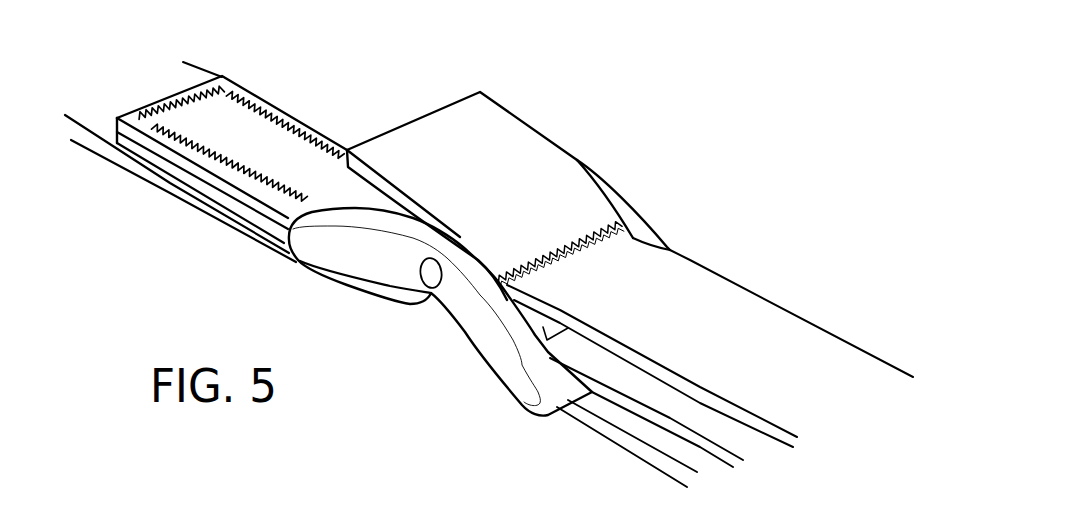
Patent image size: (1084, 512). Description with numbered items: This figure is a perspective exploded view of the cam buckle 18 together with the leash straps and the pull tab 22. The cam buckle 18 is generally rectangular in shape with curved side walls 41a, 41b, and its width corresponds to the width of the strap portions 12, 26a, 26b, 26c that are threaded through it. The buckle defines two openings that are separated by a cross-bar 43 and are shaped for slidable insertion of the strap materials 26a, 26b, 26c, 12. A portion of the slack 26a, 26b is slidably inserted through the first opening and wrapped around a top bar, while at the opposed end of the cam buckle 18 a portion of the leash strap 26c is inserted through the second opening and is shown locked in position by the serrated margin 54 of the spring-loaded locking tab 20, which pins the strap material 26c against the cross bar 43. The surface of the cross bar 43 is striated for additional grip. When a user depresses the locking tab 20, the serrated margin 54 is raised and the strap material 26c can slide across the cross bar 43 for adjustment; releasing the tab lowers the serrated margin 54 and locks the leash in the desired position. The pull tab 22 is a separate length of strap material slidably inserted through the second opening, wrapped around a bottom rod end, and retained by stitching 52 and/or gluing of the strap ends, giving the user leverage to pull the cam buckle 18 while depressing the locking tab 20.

The leash strap 12 is at (152, 181).
The cam buckle 18 is at (647, 137).
The locking tab 20 is at (492, 176).
The pull tab 22 is at (252, 145).
The slack 26a is at (705, 494).
The slack 26b is at (758, 475).
The leash strap 26c is at (815, 419).
The curved side wall 41a is at (464, 318).
The curved side wall 41b is at (627, 206).
The cross-bar 43 is at (545, 346).
The stitching 52 is at (247, 100).
The serrated margin 54 is at (570, 252).